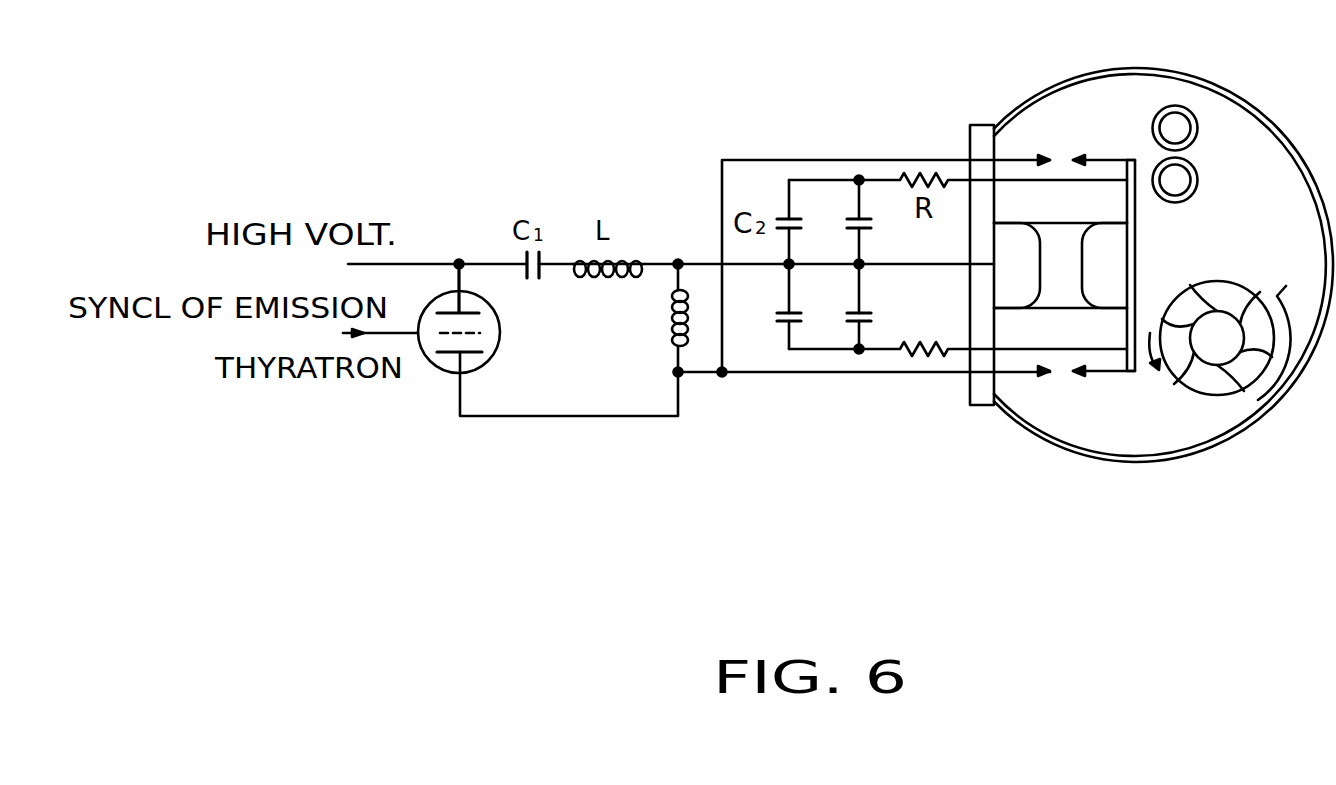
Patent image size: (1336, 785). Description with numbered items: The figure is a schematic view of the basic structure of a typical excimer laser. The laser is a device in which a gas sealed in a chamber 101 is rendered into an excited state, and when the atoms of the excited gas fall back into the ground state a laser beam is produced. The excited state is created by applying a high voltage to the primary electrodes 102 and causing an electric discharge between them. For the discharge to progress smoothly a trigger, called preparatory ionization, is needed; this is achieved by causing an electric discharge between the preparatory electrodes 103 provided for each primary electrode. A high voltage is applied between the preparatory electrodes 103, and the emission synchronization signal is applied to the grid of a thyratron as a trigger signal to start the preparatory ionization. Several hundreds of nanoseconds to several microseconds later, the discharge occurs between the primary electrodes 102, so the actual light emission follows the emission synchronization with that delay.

The chamber 101 is at (1246, 92).
The primary electrodes 102 is at (1075, 276).
The preparatory electrodes 103 is at (1060, 150).